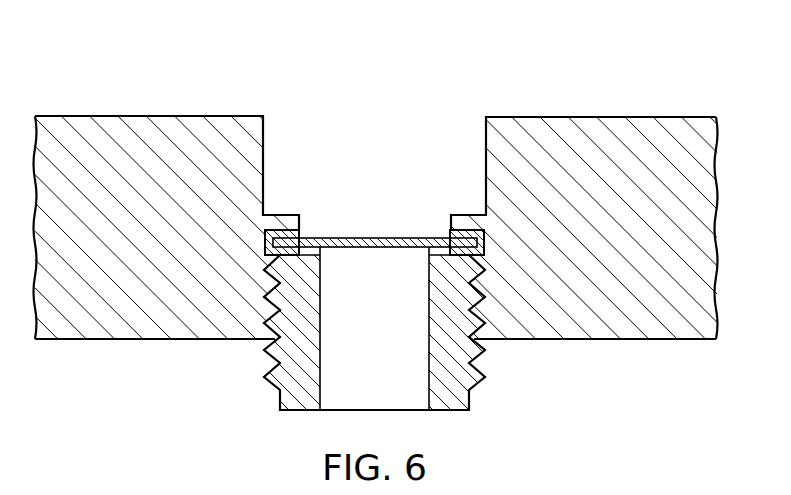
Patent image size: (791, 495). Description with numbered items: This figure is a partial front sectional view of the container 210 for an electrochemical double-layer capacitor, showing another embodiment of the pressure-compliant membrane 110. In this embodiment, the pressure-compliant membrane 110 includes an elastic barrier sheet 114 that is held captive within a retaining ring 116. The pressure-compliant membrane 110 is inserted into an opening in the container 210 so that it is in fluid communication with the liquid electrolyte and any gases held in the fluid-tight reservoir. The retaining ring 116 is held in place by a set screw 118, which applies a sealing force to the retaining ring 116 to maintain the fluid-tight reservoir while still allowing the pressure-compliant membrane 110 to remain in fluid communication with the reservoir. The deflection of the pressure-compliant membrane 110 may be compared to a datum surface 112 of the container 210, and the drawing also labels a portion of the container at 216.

The pressure-compliant membrane 110 is at (357, 294).
The datum surface 112 is at (142, 116).
The elastic barrier sheet 114 is at (340, 237).
The retaining ring 116 is at (283, 230).
The set screw 118 is at (280, 408).
The container 210 is at (376, 249).
The second block 216 is at (608, 100).